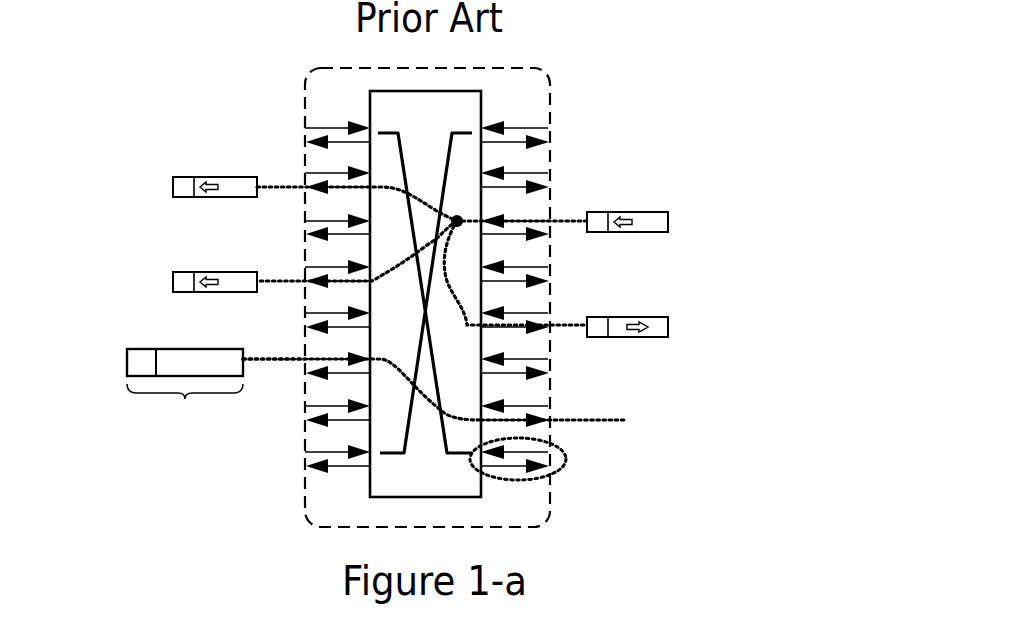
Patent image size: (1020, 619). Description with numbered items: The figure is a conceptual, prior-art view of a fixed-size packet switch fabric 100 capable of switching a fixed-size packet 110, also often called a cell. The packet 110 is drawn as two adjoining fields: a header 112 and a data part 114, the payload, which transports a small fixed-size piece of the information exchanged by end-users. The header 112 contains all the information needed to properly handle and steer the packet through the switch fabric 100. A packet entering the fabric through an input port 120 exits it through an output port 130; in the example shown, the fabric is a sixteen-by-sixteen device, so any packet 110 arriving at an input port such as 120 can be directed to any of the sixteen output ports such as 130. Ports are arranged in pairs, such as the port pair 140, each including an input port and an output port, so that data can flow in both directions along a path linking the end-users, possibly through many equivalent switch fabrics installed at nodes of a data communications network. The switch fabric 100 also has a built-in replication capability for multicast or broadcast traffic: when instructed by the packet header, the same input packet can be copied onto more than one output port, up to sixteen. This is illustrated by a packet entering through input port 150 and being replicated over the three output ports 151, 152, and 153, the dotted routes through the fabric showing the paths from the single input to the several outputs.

The fixed-size packet switch fabric 100 is at (520, 528).
The fixed-size packet 110 is at (141, 354).
The header 112 is at (140, 349).
The data part 114 is at (171, 341).
The input port 120 is at (280, 362).
The output port 130 is at (590, 419).
The port pair 140 is at (556, 473).
The input port 150 is at (630, 212).
The output port 151 is at (630, 317).
The output port 152 is at (236, 177).
The output port 153 is at (236, 272).